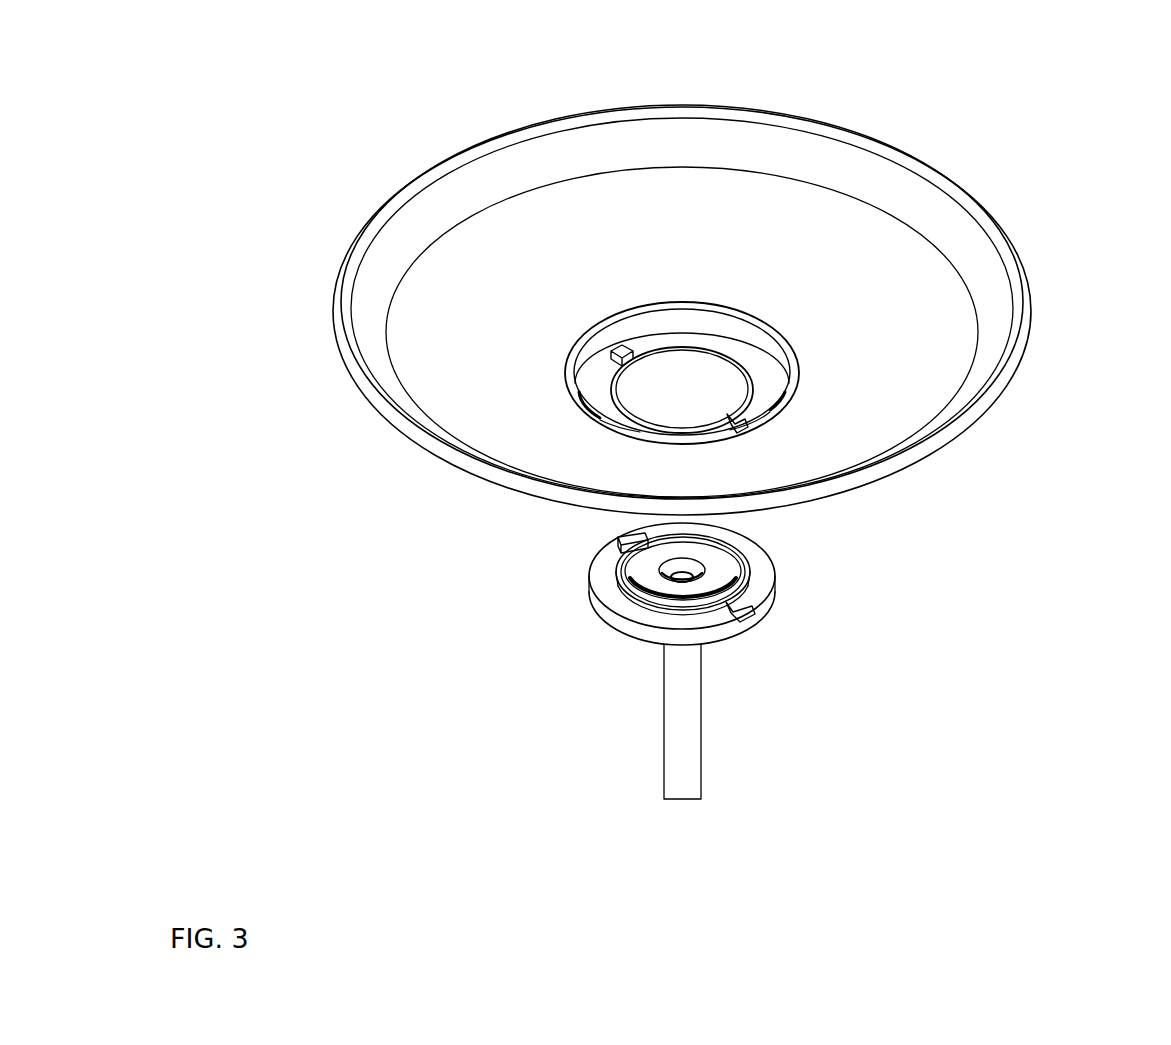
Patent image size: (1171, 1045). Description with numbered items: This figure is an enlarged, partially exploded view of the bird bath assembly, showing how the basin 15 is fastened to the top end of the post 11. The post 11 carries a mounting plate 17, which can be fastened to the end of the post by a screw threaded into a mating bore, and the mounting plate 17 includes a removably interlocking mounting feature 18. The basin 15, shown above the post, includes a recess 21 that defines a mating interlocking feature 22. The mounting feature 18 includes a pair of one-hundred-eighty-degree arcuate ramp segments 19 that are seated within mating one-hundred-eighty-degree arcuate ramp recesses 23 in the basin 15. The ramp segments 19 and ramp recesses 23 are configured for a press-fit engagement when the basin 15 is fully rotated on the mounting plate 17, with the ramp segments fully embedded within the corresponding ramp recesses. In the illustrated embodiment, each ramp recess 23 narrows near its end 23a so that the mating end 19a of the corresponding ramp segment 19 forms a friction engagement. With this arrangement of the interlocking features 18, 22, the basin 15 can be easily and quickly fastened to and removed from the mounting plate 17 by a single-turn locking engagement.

The post 11 is at (691, 744).
The basin 15 is at (985, 327).
The mounting plate 17 is at (597, 607).
The mounting feature 18 is at (755, 580).
The arcuate ramp segment 19 is at (718, 535).
The mating end of ramp segment 19a is at (647, 535).
The recess 21 is at (597, 327).
The mating interlocking feature 22 is at (597, 380).
The arcuate ramp recess 23 is at (664, 350).
The end of ramp recess 23a is at (627, 332).